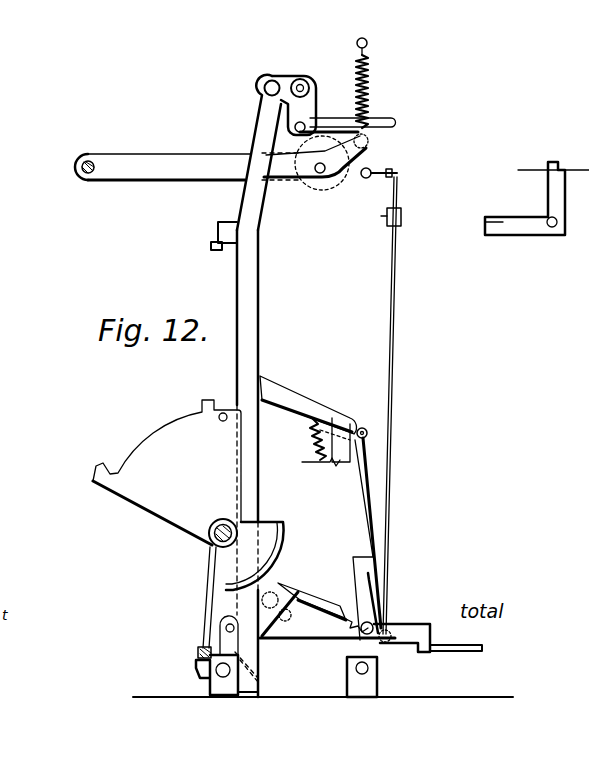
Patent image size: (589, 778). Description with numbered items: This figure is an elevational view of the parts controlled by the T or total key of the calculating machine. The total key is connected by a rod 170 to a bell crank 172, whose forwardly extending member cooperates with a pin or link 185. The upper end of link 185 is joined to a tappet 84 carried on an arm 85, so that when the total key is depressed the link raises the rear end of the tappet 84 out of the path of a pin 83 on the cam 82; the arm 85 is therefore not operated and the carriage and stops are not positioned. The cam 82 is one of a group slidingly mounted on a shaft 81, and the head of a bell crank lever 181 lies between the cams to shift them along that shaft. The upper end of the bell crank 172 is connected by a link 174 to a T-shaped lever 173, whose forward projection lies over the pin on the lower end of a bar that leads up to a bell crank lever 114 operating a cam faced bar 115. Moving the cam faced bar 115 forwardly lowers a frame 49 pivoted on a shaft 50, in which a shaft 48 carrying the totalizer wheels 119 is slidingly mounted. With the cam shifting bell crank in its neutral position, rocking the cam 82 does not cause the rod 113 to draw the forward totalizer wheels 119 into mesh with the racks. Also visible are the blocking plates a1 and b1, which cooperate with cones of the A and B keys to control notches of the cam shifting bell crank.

The shaft 48 is at (340, 178).
The frame 49 is at (155, 176).
The shaft 50 is at (94, 160).
The shaft 81 is at (208, 542).
The cam 82 is at (150, 500).
The pin 83 is at (221, 410).
The tappet 84 is at (288, 402).
The arm 85 is at (314, 458).
The rod 113 is at (259, 284).
The bell crank lever 114 is at (308, 60).
The cam faced bar 115 is at (322, 124).
The totalizer wheels 119 is at (322, 198).
The rod 170 is at (450, 652).
The bell crank 172 is at (378, 632).
The T-shaped lever 173 is at (216, 640).
The link 174 is at (290, 636).
The lever 181 is at (200, 590).
The link 185 is at (376, 512).
The blocking plate a1 is at (198, 650).
The blocking plate b1 is at (244, 656).